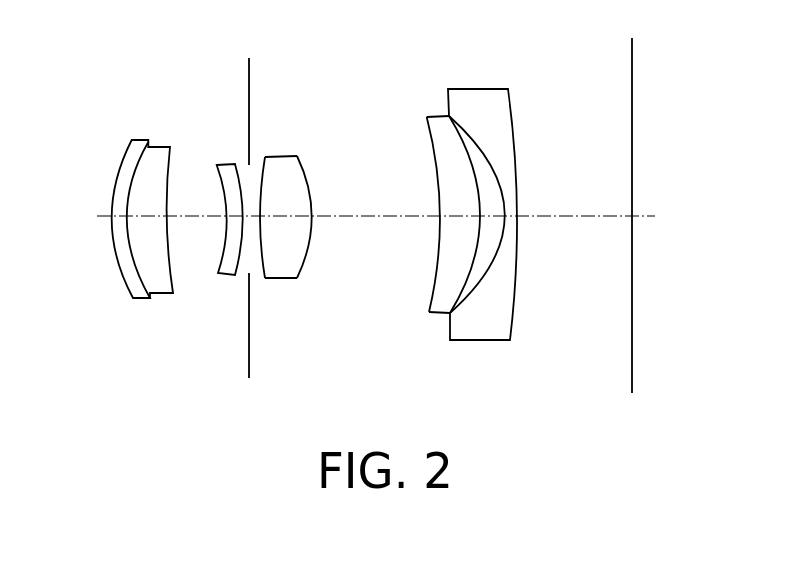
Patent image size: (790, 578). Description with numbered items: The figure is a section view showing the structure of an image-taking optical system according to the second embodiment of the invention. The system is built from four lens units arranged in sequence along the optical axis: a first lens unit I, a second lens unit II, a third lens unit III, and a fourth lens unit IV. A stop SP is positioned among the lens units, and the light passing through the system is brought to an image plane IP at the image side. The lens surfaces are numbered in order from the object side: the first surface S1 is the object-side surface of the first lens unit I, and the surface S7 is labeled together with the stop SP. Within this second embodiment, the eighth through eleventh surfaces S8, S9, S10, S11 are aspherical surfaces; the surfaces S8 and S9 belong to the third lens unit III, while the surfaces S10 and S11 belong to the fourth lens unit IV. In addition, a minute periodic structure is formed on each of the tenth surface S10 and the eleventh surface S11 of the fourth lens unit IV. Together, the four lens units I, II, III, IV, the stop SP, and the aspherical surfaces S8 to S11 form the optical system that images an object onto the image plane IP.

The first lens unit I is at (134, 235).
The second lens unit II is at (225, 280).
The third lens unit III is at (296, 216).
The fourth lens unit IV is at (441, 223).
The first lens surface (object side of first lens unit) S1 is at (125, 157).
The stop SP is at (248, 87).
The aperture stop surface S7 is at (188, 216).
The 8th surface S8 is at (263, 157).
The 9th surface S9 is at (303, 172).
The 10th surface S10 is at (430, 138).
The 11th surface S11 is at (472, 128).
The image plane IP is at (631, 47).